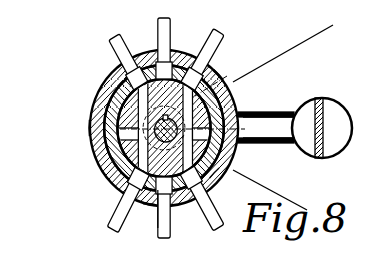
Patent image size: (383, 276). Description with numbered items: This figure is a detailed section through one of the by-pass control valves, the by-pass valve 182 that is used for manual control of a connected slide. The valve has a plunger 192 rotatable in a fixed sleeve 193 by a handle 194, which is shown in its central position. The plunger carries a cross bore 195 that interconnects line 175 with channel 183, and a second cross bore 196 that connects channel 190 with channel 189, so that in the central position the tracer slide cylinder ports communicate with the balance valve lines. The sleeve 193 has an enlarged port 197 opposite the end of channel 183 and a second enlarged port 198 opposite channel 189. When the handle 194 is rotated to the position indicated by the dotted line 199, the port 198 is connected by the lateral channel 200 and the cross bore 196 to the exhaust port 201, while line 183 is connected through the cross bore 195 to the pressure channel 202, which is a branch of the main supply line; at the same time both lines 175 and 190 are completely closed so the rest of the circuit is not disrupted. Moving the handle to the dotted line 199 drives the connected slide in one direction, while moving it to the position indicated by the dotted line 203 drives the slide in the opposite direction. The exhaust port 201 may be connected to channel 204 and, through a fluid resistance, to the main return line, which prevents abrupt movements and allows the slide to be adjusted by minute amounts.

The line 175 is at (227, 38).
The by-pass valve 182 is at (223, 67).
The port 183 is at (213, 196).
The port 189 is at (117, 210).
The channel 190 is at (110, 48).
The plunger 192 is at (227, 76).
The fixed sleeve 193 is at (245, 152).
The handle 194 is at (279, 133).
The cross bore 195 is at (222, 180).
The second cross bore 196 is at (103, 83).
The enlarged port 197 is at (170, 228).
The second enlarged port 198 is at (117, 158).
The dotted line 199 is at (303, 44).
The lateral channel 200 is at (82, 138).
The exhaust port 201 is at (147, 230).
The pressure channel 202 is at (158, 27).
The dotted line 203 is at (282, 195).
The channel 204 is at (167, 226).